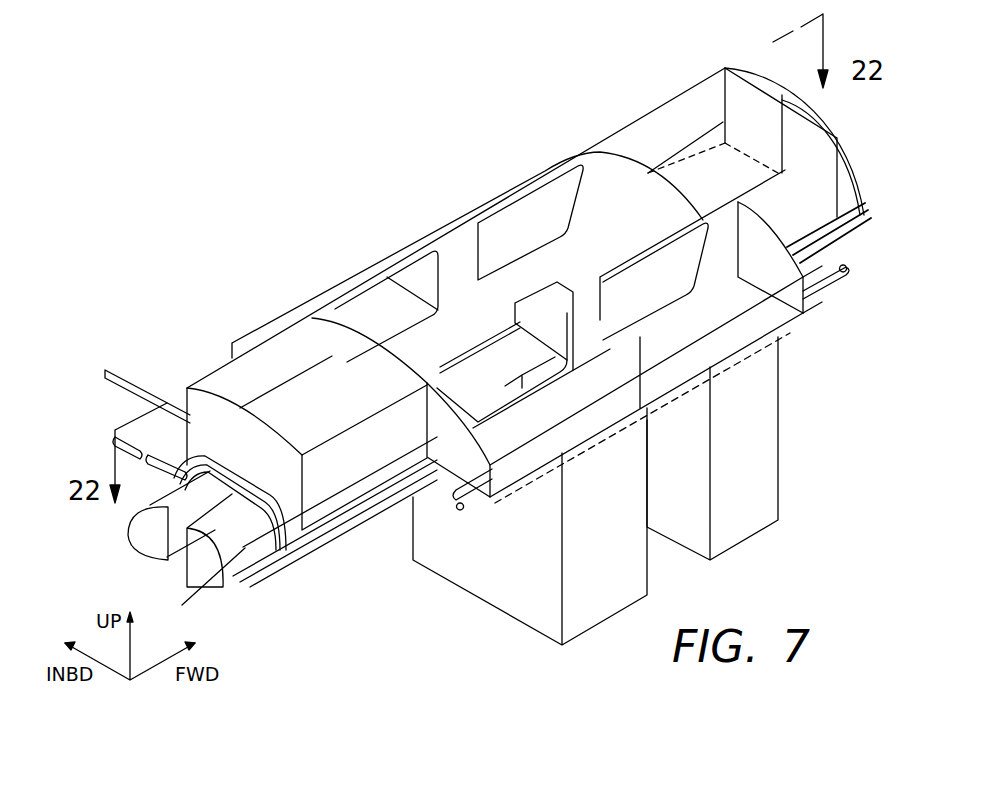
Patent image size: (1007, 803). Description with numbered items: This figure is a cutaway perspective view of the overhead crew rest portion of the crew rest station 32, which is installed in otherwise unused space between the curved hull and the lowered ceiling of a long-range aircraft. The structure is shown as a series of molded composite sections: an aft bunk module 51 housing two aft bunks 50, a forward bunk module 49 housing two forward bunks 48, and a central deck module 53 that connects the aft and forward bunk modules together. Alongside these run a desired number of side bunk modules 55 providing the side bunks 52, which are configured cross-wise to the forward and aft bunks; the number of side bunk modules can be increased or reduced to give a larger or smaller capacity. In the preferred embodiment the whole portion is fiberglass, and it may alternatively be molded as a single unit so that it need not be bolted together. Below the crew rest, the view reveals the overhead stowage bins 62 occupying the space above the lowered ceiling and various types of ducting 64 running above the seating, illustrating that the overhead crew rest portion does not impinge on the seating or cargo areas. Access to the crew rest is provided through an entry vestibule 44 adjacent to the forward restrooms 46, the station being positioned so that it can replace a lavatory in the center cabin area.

The crew rest station 32 is at (360, 162).
The entry vestibule 44 is at (517, 591).
The forward restrooms 46 is at (770, 410).
The forward bunks 48 is at (669, 97).
The forward bunk module 49 is at (824, 109).
The aft bunks 50 is at (262, 324).
The aft bunk module 51 is at (258, 372).
The side bunks 52 is at (463, 199).
The central deck module 53 is at (463, 333).
The side bunk modules 55 is at (565, 149).
The overhead stowage bins 62 is at (245, 548).
The ducting 64 is at (177, 384).